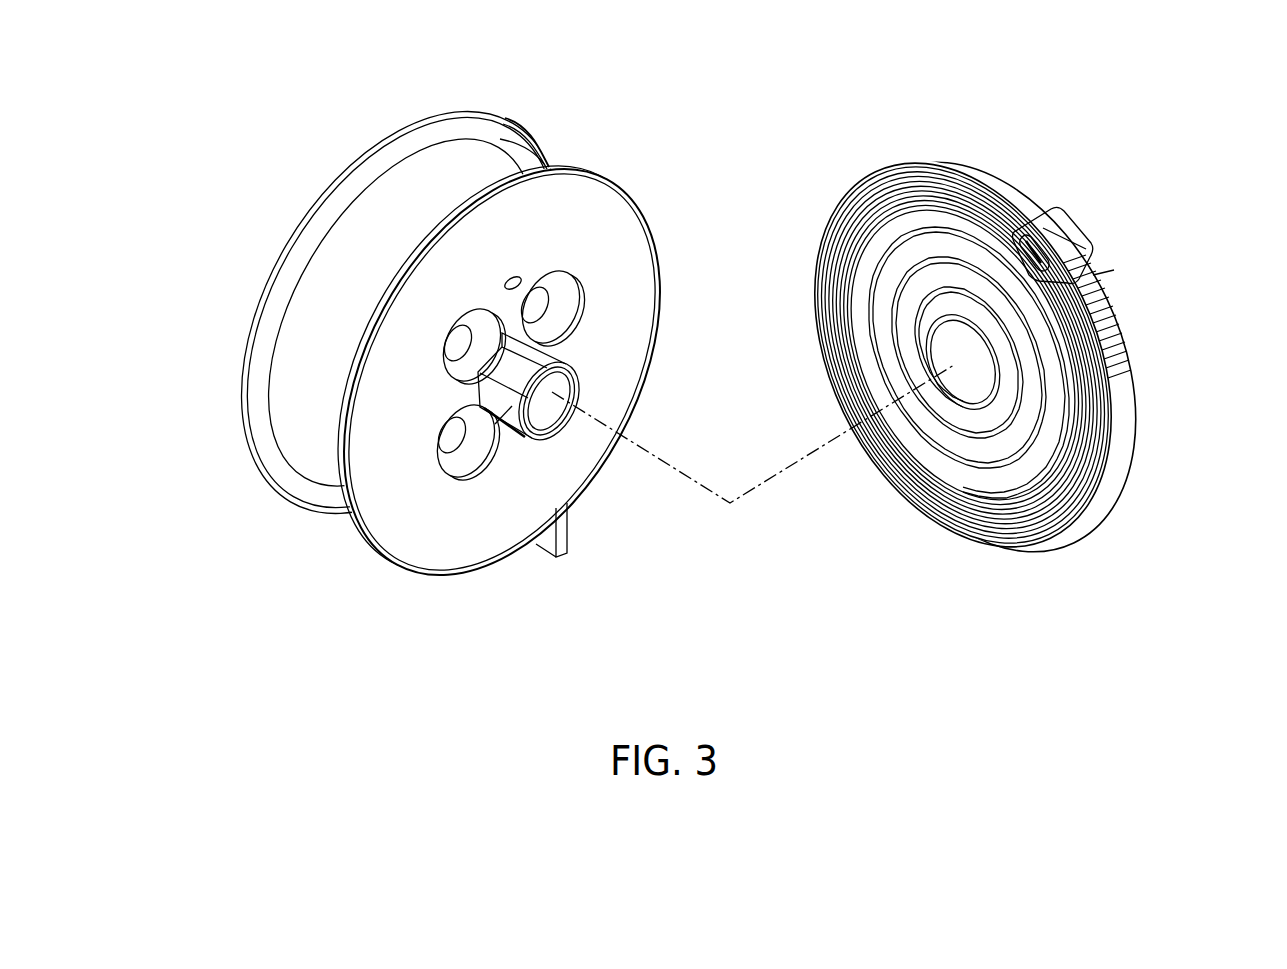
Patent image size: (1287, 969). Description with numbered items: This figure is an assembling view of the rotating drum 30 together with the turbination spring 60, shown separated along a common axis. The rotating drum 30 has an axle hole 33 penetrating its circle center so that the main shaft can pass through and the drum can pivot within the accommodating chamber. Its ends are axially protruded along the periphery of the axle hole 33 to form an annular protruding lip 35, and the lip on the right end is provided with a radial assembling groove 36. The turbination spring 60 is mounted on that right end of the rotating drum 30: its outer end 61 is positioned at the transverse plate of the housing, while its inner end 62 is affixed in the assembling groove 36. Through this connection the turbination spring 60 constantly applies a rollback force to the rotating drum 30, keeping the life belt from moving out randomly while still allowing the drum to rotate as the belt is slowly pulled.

The rotating drum 30 is at (575, 130).
The axle hole 33 is at (547, 395).
The annular protruding lip 35 is at (462, 480).
The assembling groove 36 is at (548, 418).
The turbination spring 60 is at (1123, 424).
The outer end 61 is at (1066, 245).
The inner end 62 is at (969, 389).